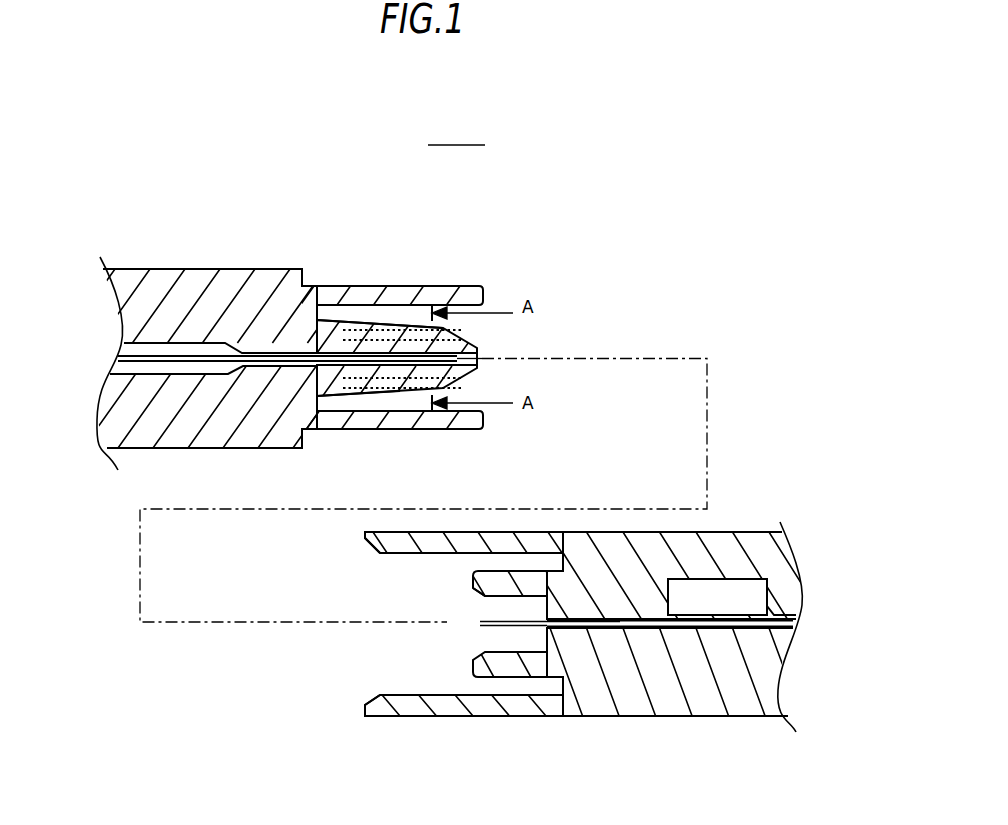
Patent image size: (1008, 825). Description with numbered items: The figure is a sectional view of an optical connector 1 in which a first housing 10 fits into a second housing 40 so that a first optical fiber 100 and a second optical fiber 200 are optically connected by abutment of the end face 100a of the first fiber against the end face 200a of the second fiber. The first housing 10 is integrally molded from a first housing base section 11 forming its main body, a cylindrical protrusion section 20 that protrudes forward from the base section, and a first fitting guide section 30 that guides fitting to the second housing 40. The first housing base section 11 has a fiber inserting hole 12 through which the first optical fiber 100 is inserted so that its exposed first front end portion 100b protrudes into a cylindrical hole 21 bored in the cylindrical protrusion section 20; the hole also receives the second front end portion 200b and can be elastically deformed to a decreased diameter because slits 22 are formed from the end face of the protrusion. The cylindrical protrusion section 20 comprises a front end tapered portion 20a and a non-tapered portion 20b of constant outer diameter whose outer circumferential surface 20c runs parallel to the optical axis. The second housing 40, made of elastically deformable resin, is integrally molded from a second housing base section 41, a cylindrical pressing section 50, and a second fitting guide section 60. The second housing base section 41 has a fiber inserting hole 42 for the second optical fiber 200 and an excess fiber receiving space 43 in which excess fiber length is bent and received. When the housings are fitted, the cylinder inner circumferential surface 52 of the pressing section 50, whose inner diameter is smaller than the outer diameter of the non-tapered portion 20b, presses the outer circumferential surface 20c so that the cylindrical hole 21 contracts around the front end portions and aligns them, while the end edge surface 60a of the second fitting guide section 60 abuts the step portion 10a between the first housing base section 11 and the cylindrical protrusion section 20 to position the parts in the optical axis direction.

The optical connector 1 is at (457, 197).
The first housing 10 is at (263, 256).
The first housing base section 11 is at (195, 268).
The fiber inserting hole 12 is at (143, 368).
The step portion 10a is at (311, 285).
The cylindrical protrusion section 20 is at (388, 319).
The front end tapered portion 20a is at (468, 342).
The non-tapered portion 20b is at (401, 395).
The outer circumferential surface 20c is at (407, 320).
The cylindrical hole 21 is at (470, 362).
The slits 22 is at (468, 350).
The first fitting guide section 30 is at (427, 286).
The first optical fiber 100 is at (175, 356).
The end face 100a is at (470, 358).
The first front end portion 100b is at (393, 386).
The second housing 40 is at (717, 528).
The second housing base section 41 is at (668, 703).
The fiber inserting hole 42 is at (643, 650).
The excess fiber receiving space 43 is at (735, 585).
The pressing section 50 is at (482, 682).
The cylinder inner circumferential surface 52 is at (507, 600).
The second fitting guide section 60 is at (417, 717).
The end edge surface 60a is at (365, 533).
The second optical fiber 200 is at (739, 613).
The end face 200a is at (460, 624).
The second front end portion 200b is at (517, 627).